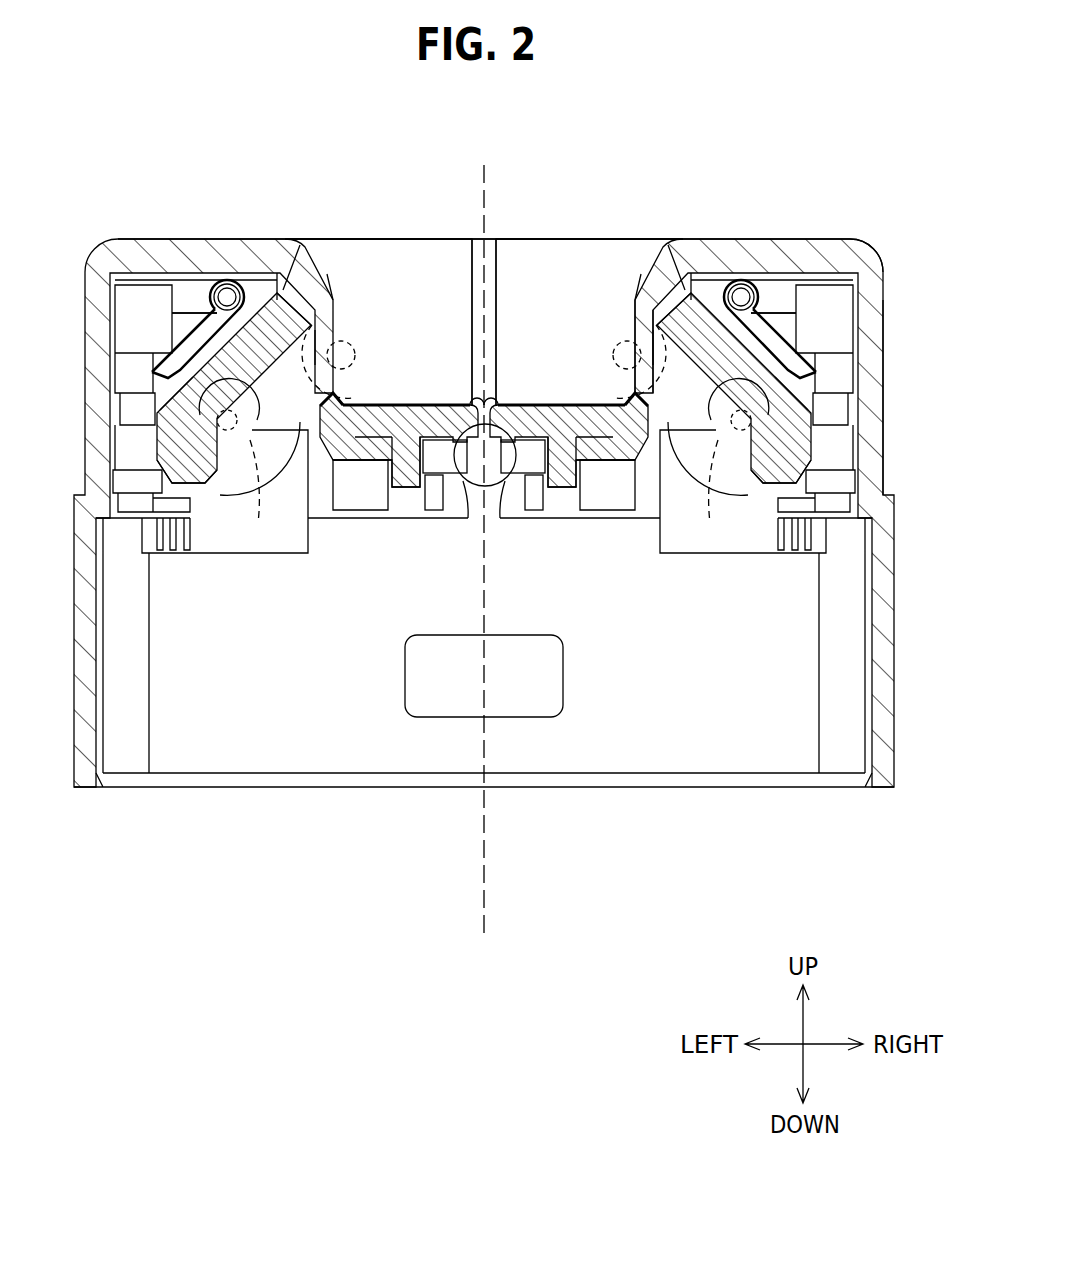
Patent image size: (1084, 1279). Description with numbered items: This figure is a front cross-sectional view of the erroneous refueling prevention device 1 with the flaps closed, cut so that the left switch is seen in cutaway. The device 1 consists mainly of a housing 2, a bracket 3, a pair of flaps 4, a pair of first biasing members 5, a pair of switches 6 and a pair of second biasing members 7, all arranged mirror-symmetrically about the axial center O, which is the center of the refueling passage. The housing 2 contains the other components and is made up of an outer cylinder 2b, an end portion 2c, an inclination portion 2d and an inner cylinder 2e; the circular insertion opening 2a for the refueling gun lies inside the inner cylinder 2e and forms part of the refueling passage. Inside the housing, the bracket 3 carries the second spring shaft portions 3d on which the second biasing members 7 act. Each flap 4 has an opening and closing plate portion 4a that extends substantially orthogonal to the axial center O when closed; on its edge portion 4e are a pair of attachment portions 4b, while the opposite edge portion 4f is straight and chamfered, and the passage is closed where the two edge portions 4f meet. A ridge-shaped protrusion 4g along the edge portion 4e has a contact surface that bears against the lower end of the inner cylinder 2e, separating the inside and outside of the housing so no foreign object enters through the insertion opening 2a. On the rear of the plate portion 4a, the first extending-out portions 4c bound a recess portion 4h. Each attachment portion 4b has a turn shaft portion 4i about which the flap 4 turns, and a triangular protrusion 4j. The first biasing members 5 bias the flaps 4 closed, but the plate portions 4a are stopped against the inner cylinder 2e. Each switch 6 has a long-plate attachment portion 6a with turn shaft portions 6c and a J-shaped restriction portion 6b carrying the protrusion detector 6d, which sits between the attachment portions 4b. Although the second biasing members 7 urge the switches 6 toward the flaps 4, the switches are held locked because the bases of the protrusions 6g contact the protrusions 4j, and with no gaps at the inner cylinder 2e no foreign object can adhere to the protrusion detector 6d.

The erroneous refueling prevention device 1 is at (569, 190).
The housing 2 is at (140, 240).
The insertion opening 2a is at (513, 281).
The outer cylinder 2b is at (884, 338).
The end portion 2c is at (830, 240).
The inclination portion 2d is at (645, 290).
The inner cylinder 2e is at (623, 290).
The bracket 3 is at (290, 560).
The second spring shaft portion 3d is at (226, 284).
The flap 4 is at (454, 388).
The opening and closing plate portion 4a is at (398, 403).
The attachment portion 4b is at (222, 482).
The first extending-out portion 4c is at (405, 490).
The edge portion 4e is at (301, 436).
The edge portion 4f is at (469, 480).
The protrusion 4g is at (344, 400).
The recess portion 4h is at (377, 457).
The turn shaft portion 4i is at (483, 499).
The protrusion 4j is at (190, 373).
The first biasing member 5 is at (440, 481).
The switch 6 is at (135, 430).
The attachment portion 6a is at (293, 248).
The restriction portion 6b is at (205, 486).
The turn shaft portion 6c is at (342, 346).
The protrusion detector 6d is at (655, 345).
The protrusion 6g is at (327, 276).
The second biasing member 7 is at (187, 290).
The axial center O is at (484, 537).